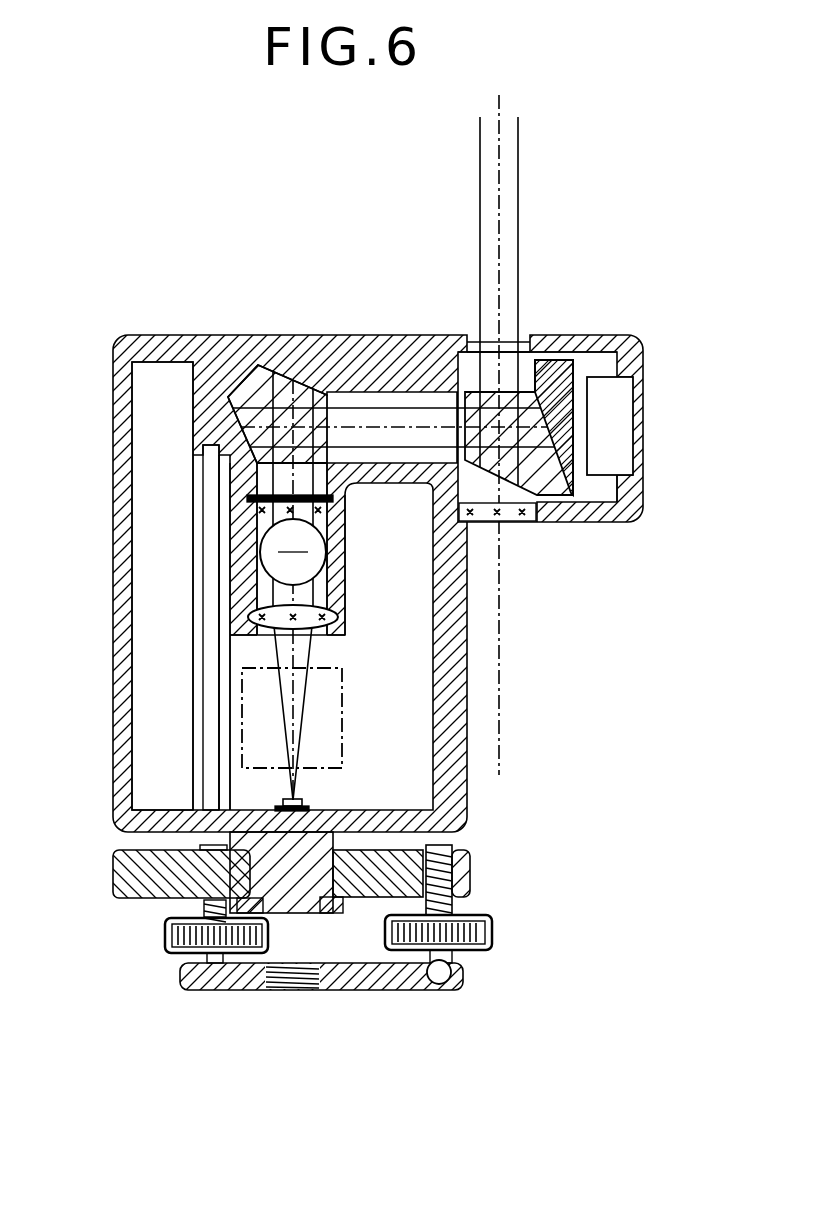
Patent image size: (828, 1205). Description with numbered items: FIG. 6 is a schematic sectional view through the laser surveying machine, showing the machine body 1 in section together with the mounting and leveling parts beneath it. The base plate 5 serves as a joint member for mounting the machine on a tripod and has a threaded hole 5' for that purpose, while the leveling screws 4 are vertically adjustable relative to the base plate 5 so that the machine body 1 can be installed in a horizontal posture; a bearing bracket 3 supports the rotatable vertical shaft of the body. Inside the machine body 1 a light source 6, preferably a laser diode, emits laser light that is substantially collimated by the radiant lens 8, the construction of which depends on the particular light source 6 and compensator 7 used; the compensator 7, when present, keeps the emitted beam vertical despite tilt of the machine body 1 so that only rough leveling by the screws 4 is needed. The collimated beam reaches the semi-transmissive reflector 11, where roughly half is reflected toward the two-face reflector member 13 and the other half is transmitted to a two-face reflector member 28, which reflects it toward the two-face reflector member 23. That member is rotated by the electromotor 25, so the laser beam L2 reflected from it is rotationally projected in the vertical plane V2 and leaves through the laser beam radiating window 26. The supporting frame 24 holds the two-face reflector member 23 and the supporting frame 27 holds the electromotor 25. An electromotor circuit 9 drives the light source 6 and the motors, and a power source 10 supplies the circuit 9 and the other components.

The machine body 1 is at (117, 674).
The bearing bracket 3 is at (470, 872).
The leveling screws 4 is at (165, 937).
The base plate 5 is at (372, 976).
The threaded hole 5' is at (251, 1010).
The light source 6 is at (303, 803).
The compensator 7 is at (332, 707).
The radiant lens 8 is at (327, 613).
The electromotor circuit 9 is at (212, 638).
The power source 10 is at (155, 545).
The semi-transmissive reflector 11 is at (332, 533).
The two-face reflector member 13 is at (265, 541).
The two-face reflector member 23 is at (540, 468).
The supporting frame 24 is at (585, 356).
The electromotor 25 is at (618, 412).
The laser beam radiating window 26 is at (498, 513).
The supporting frame 27 is at (642, 477).
The two-face reflector member 28 is at (258, 393).
The laser beam L2 is at (510, 217).
The vertical plane V2 is at (498, 132).